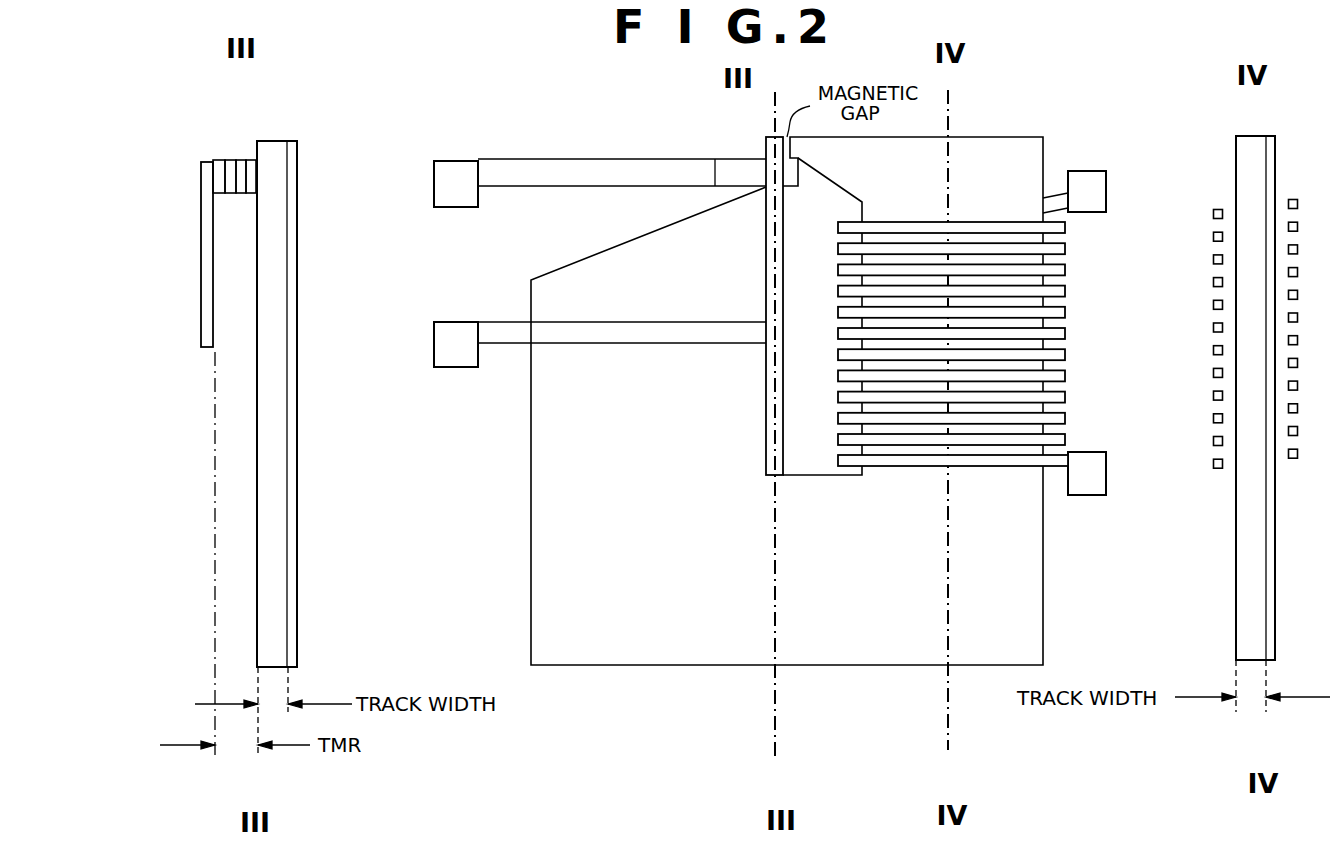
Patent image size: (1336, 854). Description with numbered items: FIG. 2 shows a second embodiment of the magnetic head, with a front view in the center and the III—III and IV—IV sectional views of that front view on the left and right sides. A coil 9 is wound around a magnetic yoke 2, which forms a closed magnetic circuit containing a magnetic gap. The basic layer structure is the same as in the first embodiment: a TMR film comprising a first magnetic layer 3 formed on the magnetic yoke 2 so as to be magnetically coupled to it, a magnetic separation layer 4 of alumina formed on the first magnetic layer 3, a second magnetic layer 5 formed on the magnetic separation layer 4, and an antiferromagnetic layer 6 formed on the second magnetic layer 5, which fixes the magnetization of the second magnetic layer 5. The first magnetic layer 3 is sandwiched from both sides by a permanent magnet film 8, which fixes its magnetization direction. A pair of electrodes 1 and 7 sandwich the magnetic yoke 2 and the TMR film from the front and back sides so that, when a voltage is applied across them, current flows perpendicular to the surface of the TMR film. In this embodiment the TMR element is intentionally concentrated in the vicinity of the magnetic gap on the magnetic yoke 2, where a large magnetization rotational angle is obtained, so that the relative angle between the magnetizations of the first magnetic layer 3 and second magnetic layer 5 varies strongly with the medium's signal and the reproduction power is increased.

The electrode 1 is at (295, 573).
The magnetic yoke 2 is at (275, 513).
The first magnetic layer 3 is at (249, 165).
The magnetic separation layer 4 is at (239, 165).
The second magnetic layer 5 is at (230, 164).
The antiferromagnetic layer 6 is at (215, 182).
The electrode 7 is at (202, 247).
The permanent magnet film 8 is at (733, 170).
The coil 9 is at (1065, 307).